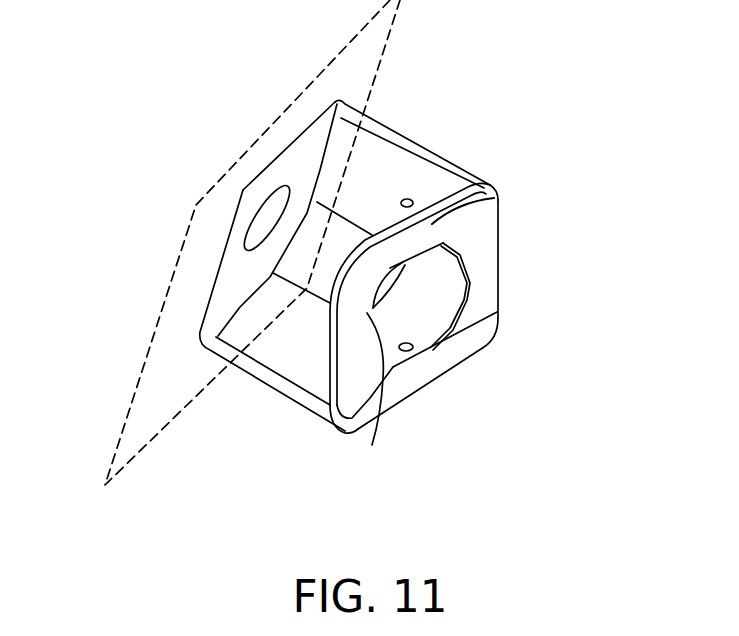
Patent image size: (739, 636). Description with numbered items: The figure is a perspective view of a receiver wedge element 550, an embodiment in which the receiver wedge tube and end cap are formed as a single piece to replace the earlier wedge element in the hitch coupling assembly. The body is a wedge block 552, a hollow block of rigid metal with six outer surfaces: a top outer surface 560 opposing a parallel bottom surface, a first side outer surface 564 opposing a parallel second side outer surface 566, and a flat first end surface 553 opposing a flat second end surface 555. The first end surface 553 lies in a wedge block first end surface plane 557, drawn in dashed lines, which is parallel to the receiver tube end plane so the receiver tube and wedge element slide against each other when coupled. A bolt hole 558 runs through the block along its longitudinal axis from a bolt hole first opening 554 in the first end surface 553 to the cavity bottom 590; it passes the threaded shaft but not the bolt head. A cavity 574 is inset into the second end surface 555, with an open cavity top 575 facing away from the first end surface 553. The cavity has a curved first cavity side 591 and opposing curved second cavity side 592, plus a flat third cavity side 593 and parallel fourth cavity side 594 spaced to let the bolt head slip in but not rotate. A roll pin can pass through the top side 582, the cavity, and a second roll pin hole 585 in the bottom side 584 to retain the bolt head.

The receiver wedge element 550 is at (233, 56).
The wedge block 552 is at (413, 147).
The first end surface 553 is at (229, 285).
The bolt hole first opening 554 is at (250, 231).
The second end surface 555 is at (412, 380).
The wedge block first end surface plane 557 is at (168, 352).
The bolt hole 558 is at (277, 208).
The top outer surface 560 is at (364, 191).
The first side outer surface 564 is at (273, 362).
The second side outer surface 566 is at (500, 249).
The cavity 574 is at (426, 313).
The open cavity top 575 is at (413, 347).
The top side 582 is at (478, 190).
The bottom side 584 is at (460, 360).
The second roll pin hole 585 is at (433, 333).
The cavity bottom 590 is at (400, 290).
The first cavity side 591 is at (388, 288).
The second cavity side 592 is at (343, 436).
The third cavity side 593 is at (483, 216).
The fourth cavity side 594 is at (372, 445).